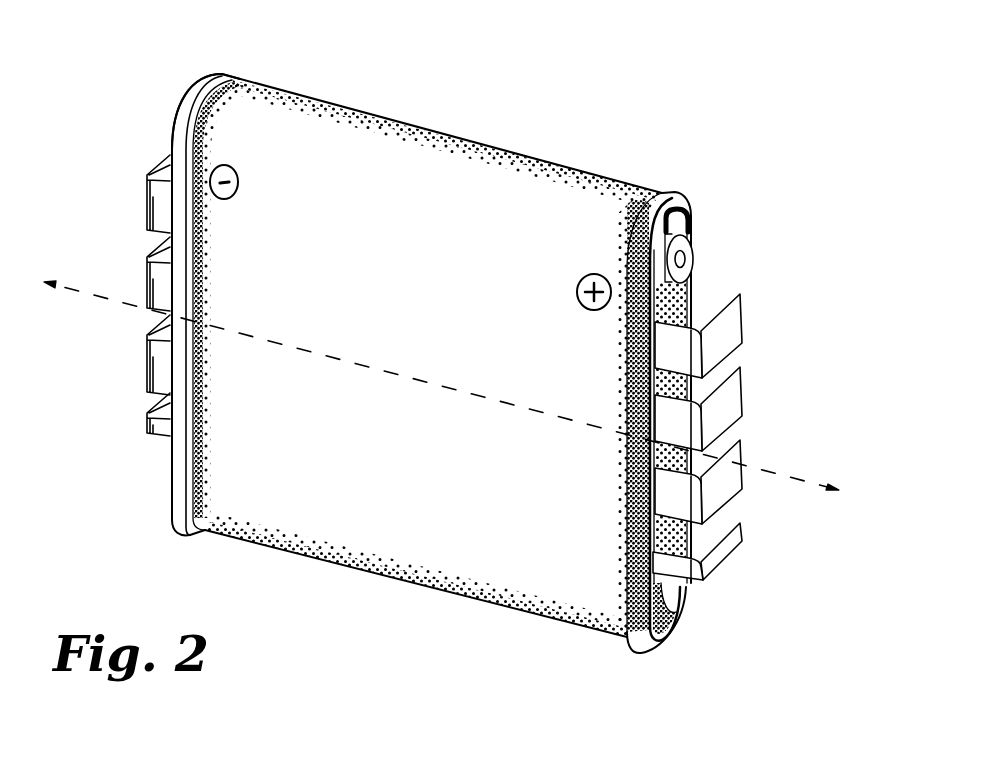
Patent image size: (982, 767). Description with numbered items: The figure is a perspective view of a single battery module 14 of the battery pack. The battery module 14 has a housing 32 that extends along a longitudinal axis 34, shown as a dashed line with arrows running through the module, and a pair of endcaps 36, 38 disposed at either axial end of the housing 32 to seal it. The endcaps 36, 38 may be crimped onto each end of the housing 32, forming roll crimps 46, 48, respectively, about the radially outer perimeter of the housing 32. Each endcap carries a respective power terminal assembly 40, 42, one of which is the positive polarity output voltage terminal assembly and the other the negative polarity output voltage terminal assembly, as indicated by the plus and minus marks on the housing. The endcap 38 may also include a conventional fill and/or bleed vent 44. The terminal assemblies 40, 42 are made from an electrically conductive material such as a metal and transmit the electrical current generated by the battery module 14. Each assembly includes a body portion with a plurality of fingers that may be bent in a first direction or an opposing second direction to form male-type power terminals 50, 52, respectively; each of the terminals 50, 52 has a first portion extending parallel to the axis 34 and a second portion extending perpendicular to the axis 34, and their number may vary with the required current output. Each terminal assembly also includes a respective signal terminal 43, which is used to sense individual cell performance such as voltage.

The battery module 14 is at (446, 334).
The housing 32 is at (397, 140).
The longitudinal axis 34 is at (795, 481).
The endcap 36 is at (188, 97).
The endcap 38 is at (716, 204).
The power terminal assembly 40 is at (126, 268).
The power terminal assembly 42 is at (733, 413).
The signal terminal 43 is at (160, 436).
The fill and/or bleed vent 44 is at (685, 260).
The roll crimp 46 is at (222, 78).
The roll crimp 48 is at (665, 196).
The male-type power terminal 50 is at (128, 251).
The male-type power terminal 52 is at (731, 400).